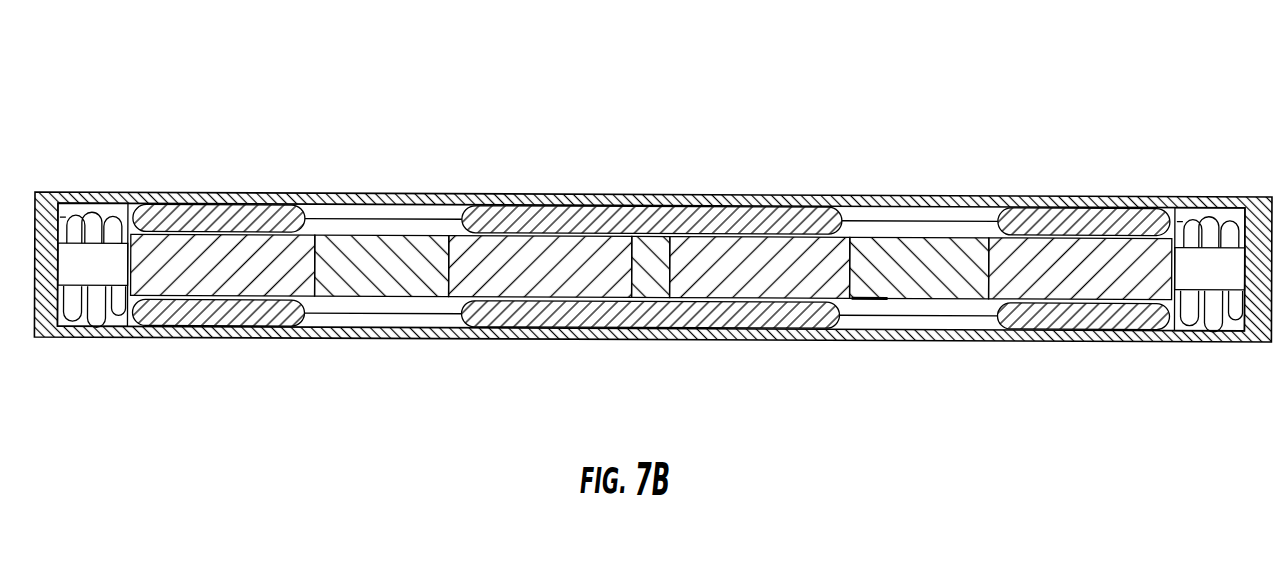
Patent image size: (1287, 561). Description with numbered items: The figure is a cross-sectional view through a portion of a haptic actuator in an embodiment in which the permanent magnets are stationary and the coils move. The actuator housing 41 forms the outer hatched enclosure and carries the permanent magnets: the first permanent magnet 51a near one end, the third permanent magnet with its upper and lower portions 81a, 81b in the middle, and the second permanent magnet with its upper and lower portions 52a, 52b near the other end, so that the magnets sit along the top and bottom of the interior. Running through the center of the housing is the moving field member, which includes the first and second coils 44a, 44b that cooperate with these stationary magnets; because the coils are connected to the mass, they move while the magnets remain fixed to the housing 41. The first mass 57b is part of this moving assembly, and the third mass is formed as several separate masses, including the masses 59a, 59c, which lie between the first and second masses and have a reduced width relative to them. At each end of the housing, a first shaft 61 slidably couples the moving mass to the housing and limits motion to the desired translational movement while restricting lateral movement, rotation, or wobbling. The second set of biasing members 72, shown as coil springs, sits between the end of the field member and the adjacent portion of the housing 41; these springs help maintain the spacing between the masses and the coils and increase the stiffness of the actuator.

The actuator housing 41 is at (348, 310).
The first coil 44a is at (262, 243).
The second coil 44b is at (830, 258).
The first permanent magnet 51a is at (188, 200).
The second permanent magnet 52a is at (1072, 212).
The second permanent magnet 52b is at (1088, 316).
The first mass 57b is at (927, 250).
The third mass 59a is at (397, 248).
The third mass 59c is at (703, 337).
The first shaft 61 is at (98, 265).
The second set of biasing members 72 is at (97, 243).
The third permanent magnet 81a is at (597, 212).
The third permanent magnet 81b is at (613, 313).